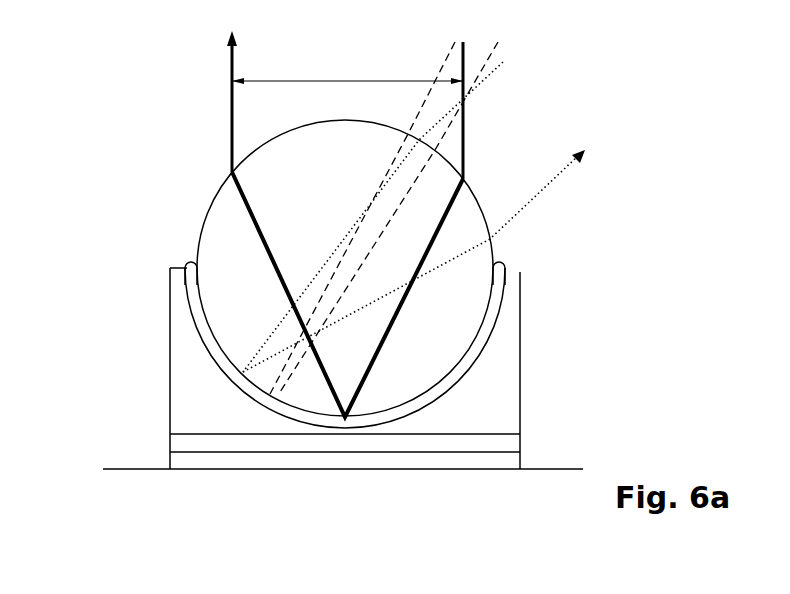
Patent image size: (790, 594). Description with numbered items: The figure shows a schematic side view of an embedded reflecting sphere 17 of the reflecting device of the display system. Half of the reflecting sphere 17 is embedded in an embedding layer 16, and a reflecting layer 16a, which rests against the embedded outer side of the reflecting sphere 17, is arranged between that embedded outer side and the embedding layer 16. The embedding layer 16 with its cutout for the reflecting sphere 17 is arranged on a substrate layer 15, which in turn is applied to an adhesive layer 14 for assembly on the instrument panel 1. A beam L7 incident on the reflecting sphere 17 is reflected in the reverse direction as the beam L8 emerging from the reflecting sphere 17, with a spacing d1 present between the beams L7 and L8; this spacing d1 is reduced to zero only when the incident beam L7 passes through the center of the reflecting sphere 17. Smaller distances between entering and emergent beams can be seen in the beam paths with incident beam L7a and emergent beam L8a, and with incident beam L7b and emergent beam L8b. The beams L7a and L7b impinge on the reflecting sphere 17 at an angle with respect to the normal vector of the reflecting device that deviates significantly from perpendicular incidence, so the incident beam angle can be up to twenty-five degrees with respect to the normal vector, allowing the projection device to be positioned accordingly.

The instrument panel 1 is at (556, 469).
The adhesive layer 14 is at (182, 459).
The substrate layer 15 is at (182, 441).
The embedding layer 16 is at (185, 368).
The reflecting layer 16a is at (190, 302).
The reflecting sphere 17 is at (218, 230).
The incident beam L7 is at (463, 138).
The incident beam L7a is at (492, 54).
The incident beam L7b is at (482, 84).
The emergent beam L8 is at (230, 110).
The emergent beam L8a is at (445, 57).
The emergent beam L8b is at (523, 216).
The spacing d1 is at (280, 81).